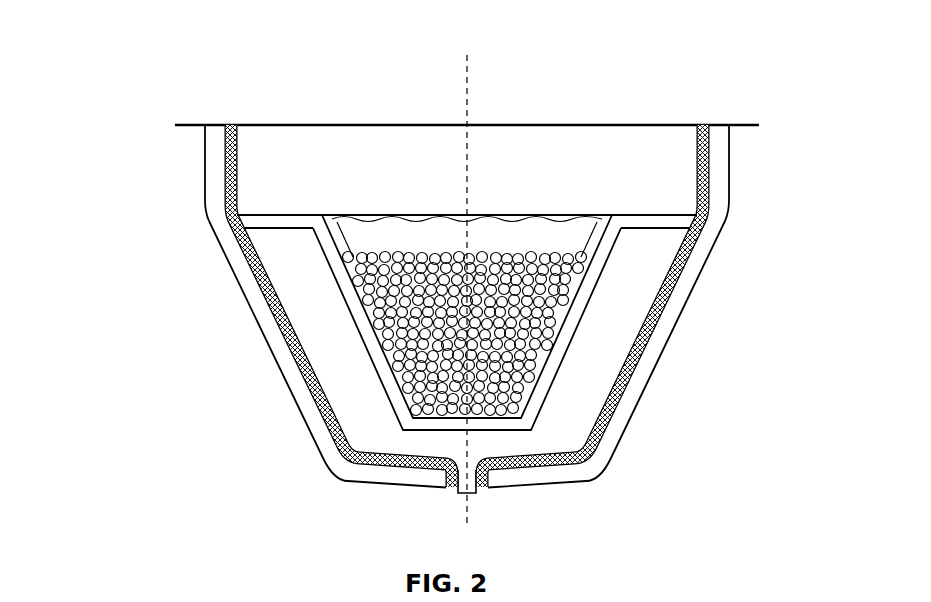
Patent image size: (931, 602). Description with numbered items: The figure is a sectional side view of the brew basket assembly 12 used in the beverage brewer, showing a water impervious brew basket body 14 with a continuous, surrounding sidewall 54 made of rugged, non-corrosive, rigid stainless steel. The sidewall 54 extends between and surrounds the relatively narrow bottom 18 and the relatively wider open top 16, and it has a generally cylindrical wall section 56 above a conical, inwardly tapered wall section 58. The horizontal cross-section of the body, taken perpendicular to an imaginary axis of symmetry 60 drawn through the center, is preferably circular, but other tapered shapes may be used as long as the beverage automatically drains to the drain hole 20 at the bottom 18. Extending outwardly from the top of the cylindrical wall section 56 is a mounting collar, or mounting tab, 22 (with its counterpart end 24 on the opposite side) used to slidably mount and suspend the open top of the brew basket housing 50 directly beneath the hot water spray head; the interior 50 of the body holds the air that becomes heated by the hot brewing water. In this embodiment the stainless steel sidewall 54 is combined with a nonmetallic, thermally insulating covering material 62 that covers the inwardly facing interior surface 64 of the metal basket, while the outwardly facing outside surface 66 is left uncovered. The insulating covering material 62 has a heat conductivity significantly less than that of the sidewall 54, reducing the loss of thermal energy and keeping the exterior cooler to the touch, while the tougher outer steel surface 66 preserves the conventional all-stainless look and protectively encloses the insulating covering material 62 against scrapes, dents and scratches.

The brew basket assembly 12 is at (130, 54).
The brew basket body 14 is at (244, 271).
The open top 16 is at (459, 125).
The bottom 18 is at (380, 482).
The drain hole 20 is at (465, 493).
The mounting collar 22 is at (186, 125).
The second flange end 24 is at (737, 125).
The interior 50 is at (233, 184).
The sidewall 54 is at (673, 312).
The cylindrical wall section 56 is at (208, 155).
The inwardly tapered wall section 58 is at (268, 326).
The axis of symmetry 60 is at (469, 95).
The insulating covering material 62 is at (697, 182).
The interior surface 64 is at (697, 242).
The outside surface 66 is at (653, 387).